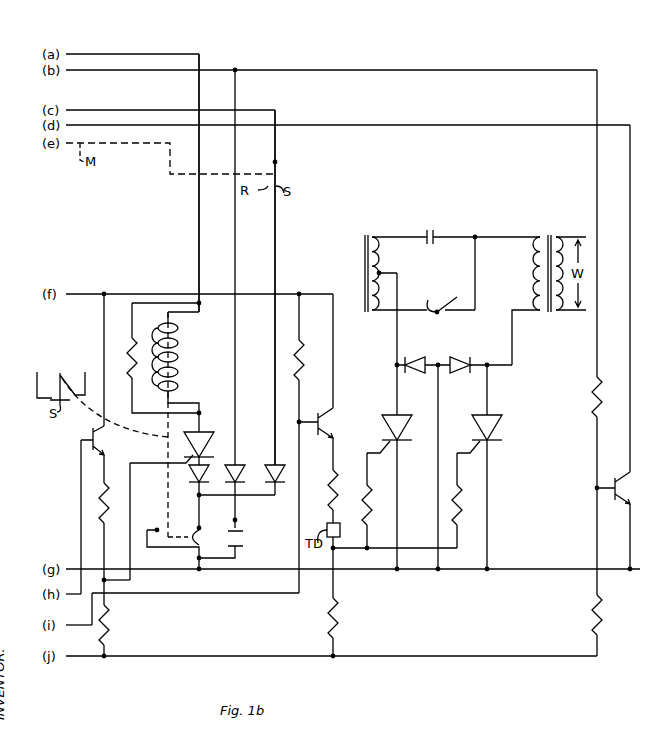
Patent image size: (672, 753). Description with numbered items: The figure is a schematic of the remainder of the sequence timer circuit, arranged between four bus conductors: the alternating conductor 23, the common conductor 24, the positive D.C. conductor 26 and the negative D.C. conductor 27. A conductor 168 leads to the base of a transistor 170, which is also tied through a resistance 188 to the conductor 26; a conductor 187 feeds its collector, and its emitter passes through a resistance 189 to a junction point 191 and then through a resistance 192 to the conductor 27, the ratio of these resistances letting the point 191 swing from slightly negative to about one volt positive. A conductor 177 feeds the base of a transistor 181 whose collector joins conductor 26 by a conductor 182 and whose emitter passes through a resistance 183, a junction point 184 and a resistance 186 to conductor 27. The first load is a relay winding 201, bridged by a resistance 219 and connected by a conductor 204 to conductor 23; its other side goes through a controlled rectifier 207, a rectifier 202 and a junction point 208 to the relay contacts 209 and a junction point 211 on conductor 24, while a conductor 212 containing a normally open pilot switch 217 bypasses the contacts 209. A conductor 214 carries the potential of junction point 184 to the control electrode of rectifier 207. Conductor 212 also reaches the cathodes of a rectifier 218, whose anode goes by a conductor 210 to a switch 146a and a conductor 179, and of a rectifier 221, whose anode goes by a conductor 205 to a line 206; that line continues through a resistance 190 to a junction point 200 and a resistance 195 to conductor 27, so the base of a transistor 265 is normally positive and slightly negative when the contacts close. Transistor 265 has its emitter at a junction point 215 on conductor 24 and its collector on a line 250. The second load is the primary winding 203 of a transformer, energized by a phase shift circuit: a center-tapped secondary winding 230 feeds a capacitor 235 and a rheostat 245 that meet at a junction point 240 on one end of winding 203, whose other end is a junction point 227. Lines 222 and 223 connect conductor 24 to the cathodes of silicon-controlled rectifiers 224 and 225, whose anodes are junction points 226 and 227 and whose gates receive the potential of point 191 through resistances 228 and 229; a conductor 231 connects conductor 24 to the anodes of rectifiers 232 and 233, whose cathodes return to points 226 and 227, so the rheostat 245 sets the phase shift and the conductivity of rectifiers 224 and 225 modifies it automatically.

The bus conductor 23 is at (97, 54).
The line 206 is at (124, 71).
The conductor 179 is at (118, 110).
The line 250 is at (355, 125).
The switch 146a is at (277, 162).
The conductor 204 is at (199, 230).
The conductor 205 is at (235, 262).
The conductor 210 is at (275, 262).
The positive D.C. conductor 26 is at (84, 294).
The conductor 182 is at (104, 333).
The resistance 219 is at (132, 345).
The relay winding 201 is at (194, 313).
The controlled rectifier 207 is at (199, 430).
The rectifier 202 is at (190, 478).
The junction point 208 is at (203, 497).
The rectifier 221 is at (235, 463).
The rectifier 218 is at (275, 463).
The pilot switch 217 is at (242, 537).
The conductor 212 is at (238, 558).
The contacts 209 is at (157, 528).
The junction point 211 is at (200, 571).
The conductor 168 is at (204, 595).
The conductor 214 is at (132, 580).
The transistor 181 is at (98, 438).
The resistance 183 is at (104, 490).
The conductor 177 is at (81, 494).
The junction point 184 is at (104, 580).
The resistance 186 is at (106, 622).
The resistance 188 is at (301, 346).
The conductor 187 is at (334, 345).
The transistor 170 is at (326, 420).
The resistance 189 is at (335, 478).
The junction point 191 is at (335, 551).
The resistance 192 is at (340, 620).
The junction point 215 is at (630, 567).
The negative D.C. conductor 27 is at (478, 656).
The common conductor 24 is at (460, 571).
The secondary winding 230 is at (366, 235).
The capacitor 235 is at (430, 229).
The junction point 240 is at (474, 236).
The rheostat 245 is at (436, 299).
The primary winding of transformer 203 is at (548, 235).
The junction point 226 is at (399, 360).
The rectifier 232 is at (414, 355).
The rectifier 233 is at (458, 354).
The conductor 231 is at (438, 422).
The junction point 227 is at (489, 367).
The silicon-controlled rectifier 224 is at (399, 420).
The silicon-controlled rectifier 225 is at (491, 425).
The resistance 228 is at (368, 503).
The resistance 229 is at (459, 503).
The line 222 is at (398, 486).
The line 223 is at (489, 497).
The resistance 190 is at (595, 402).
The junction point 200 is at (595, 488).
The transistor 265 is at (619, 491).
The resistance 195 is at (600, 620).